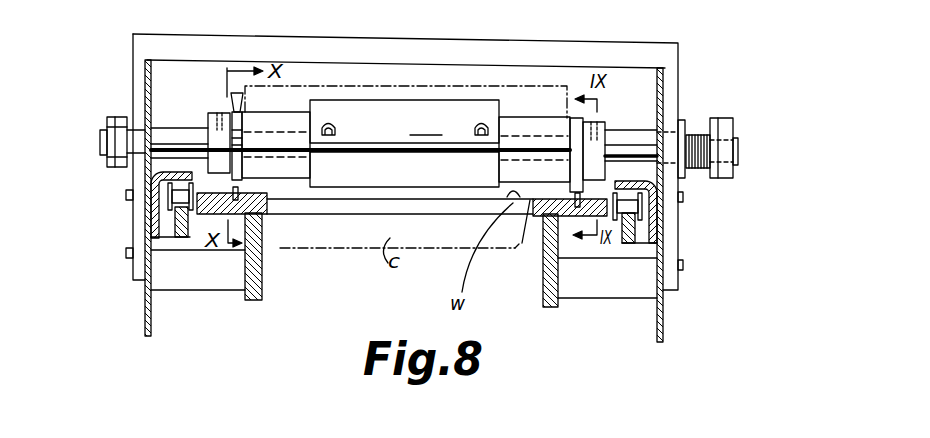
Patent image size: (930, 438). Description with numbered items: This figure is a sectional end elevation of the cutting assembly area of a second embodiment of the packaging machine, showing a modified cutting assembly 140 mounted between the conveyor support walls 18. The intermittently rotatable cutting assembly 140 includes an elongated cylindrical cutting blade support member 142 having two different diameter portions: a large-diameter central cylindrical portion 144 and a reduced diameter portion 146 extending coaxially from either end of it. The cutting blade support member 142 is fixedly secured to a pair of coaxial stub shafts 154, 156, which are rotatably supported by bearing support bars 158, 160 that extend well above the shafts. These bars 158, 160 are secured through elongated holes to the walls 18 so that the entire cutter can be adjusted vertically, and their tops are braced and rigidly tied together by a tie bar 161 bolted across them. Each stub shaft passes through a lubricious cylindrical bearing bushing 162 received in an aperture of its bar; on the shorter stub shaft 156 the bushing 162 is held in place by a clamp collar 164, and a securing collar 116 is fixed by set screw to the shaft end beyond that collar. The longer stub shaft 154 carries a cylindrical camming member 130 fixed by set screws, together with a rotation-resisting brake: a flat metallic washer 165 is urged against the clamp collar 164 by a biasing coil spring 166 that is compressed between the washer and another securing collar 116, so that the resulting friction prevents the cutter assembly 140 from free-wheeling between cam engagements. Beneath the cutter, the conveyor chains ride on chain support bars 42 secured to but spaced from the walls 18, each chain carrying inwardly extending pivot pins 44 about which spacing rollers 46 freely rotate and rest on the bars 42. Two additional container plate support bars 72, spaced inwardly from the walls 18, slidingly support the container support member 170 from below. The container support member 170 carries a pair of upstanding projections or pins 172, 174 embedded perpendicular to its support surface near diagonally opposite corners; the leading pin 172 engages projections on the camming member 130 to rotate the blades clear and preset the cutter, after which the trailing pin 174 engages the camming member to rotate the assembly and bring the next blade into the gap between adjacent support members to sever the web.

The conveyor support wall 18 is at (143, 304).
The chain support bar 42 is at (182, 238).
The chain pivot pin 44 is at (173, 222).
The spacing roller 46 is at (200, 196).
The container plate support bar 72 is at (263, 286).
The securing collar 116 is at (113, 158).
The camming member 130 is at (211, 113).
The cutting assembly 140 is at (668, 41).
The cutting blade support member 142 is at (396, 103).
The central cylindrical portion 144 is at (404, 121).
The reduced diameter portion 146 is at (268, 118).
The stub shaft 154 is at (640, 145).
The stub shaft 156 is at (160, 137).
The bearing support bar 158 is at (673, 216).
The bearing support bar 160 is at (135, 80).
The tie bar 161 is at (332, 43).
The bearing bushing 162 is at (128, 180).
The clamp collar 164 is at (132, 122).
The washer 165 is at (685, 119).
The biasing coil spring 166 is at (735, 176).
The container support member 170 is at (267, 218).
The projection or pin 172 is at (200, 196).
The projection or pin 174 is at (590, 195).